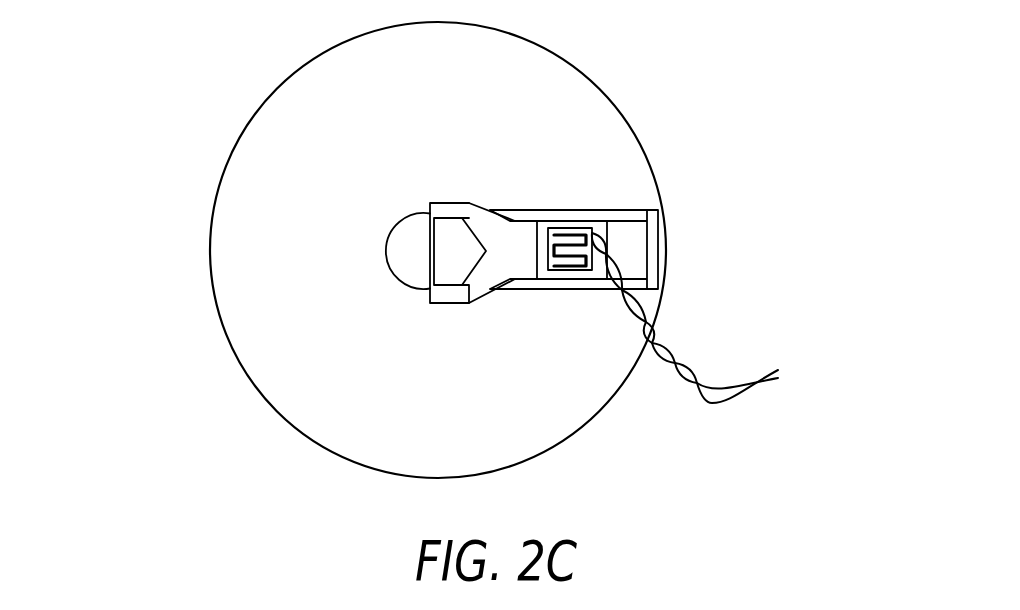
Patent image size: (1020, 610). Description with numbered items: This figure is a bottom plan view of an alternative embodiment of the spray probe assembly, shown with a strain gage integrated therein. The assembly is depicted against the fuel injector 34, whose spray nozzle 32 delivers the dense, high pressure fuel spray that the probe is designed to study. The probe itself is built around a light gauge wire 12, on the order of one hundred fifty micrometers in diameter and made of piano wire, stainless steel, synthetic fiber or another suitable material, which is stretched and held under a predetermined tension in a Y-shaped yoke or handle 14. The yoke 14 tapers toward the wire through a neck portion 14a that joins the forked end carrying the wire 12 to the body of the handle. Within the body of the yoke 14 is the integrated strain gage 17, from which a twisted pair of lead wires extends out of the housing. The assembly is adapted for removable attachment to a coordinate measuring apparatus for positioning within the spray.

The fuel injector 34 is at (212, 237).
The light gauge wire 12 is at (433, 247).
The spray nozzle 32 is at (400, 264).
The tapered neck of housing 14a is at (447, 293).
The Y-shaped yoke 14 is at (522, 198).
The sensor element 17 is at (567, 271).